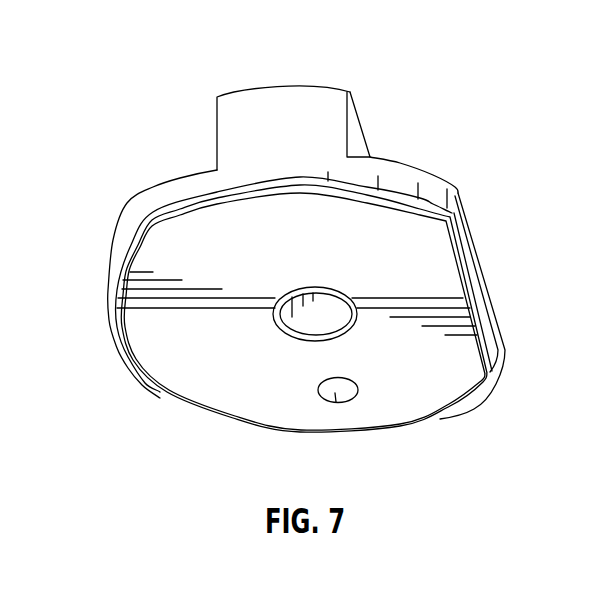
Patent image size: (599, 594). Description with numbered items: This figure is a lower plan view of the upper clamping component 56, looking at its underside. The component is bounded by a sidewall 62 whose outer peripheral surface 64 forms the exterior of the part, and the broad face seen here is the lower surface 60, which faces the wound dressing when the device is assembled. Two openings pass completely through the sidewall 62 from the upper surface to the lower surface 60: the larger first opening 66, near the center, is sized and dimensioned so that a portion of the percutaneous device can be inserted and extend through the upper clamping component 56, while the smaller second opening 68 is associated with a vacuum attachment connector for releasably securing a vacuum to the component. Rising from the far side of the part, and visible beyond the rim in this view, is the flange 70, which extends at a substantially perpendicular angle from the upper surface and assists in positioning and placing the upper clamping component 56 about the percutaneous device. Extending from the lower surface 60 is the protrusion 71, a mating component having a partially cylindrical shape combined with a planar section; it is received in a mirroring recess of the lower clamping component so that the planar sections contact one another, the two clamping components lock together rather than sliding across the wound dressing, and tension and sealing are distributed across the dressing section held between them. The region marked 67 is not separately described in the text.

The upper clamping component 56 is at (421, 45).
The lower surface 60 is at (111, 307).
The sidewall 62 is at (123, 244).
The outer peripheral surface 64 is at (408, 175).
The first opening 66 is at (333, 318).
The aperture chamfer 67 is at (287, 328).
The second opening 68 is at (342, 380).
The flange 70 is at (228, 137).
The protrusion 71 is at (412, 248).